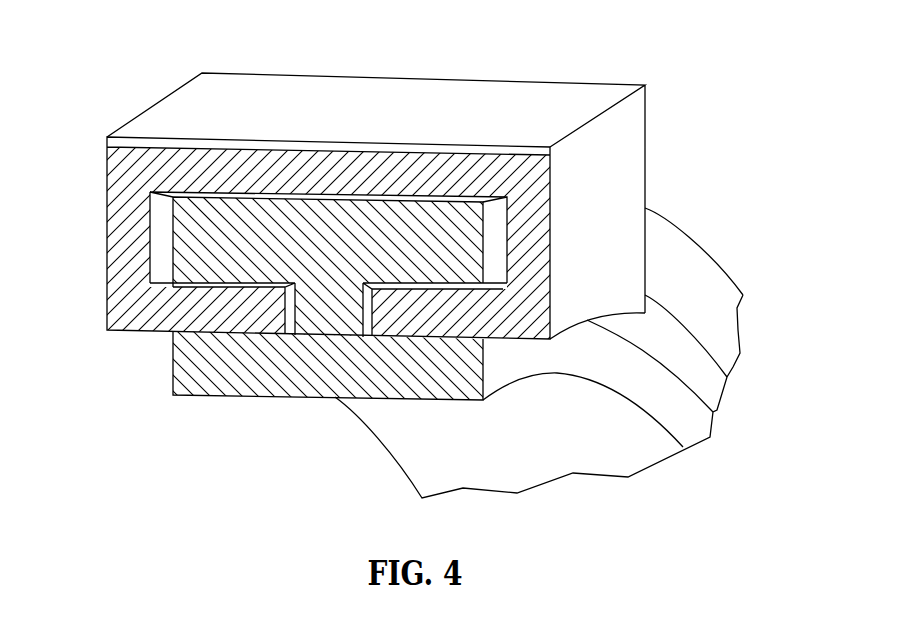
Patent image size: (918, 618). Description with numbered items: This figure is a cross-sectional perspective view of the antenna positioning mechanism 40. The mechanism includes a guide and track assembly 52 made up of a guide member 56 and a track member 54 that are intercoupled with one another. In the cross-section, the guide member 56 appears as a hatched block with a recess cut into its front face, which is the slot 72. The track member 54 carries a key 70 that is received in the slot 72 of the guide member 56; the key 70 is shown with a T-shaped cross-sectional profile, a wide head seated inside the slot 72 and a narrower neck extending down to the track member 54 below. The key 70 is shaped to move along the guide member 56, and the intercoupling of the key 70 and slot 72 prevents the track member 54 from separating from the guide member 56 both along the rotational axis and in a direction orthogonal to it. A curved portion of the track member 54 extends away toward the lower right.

The antenna positioning mechanism 40 is at (392, 259).
The guide and track assembly 52 is at (375, 229).
The track member 54 is at (733, 415).
The guide member 56 is at (497, 113).
The key 70 is at (212, 260).
The slot 72 is at (128, 245).